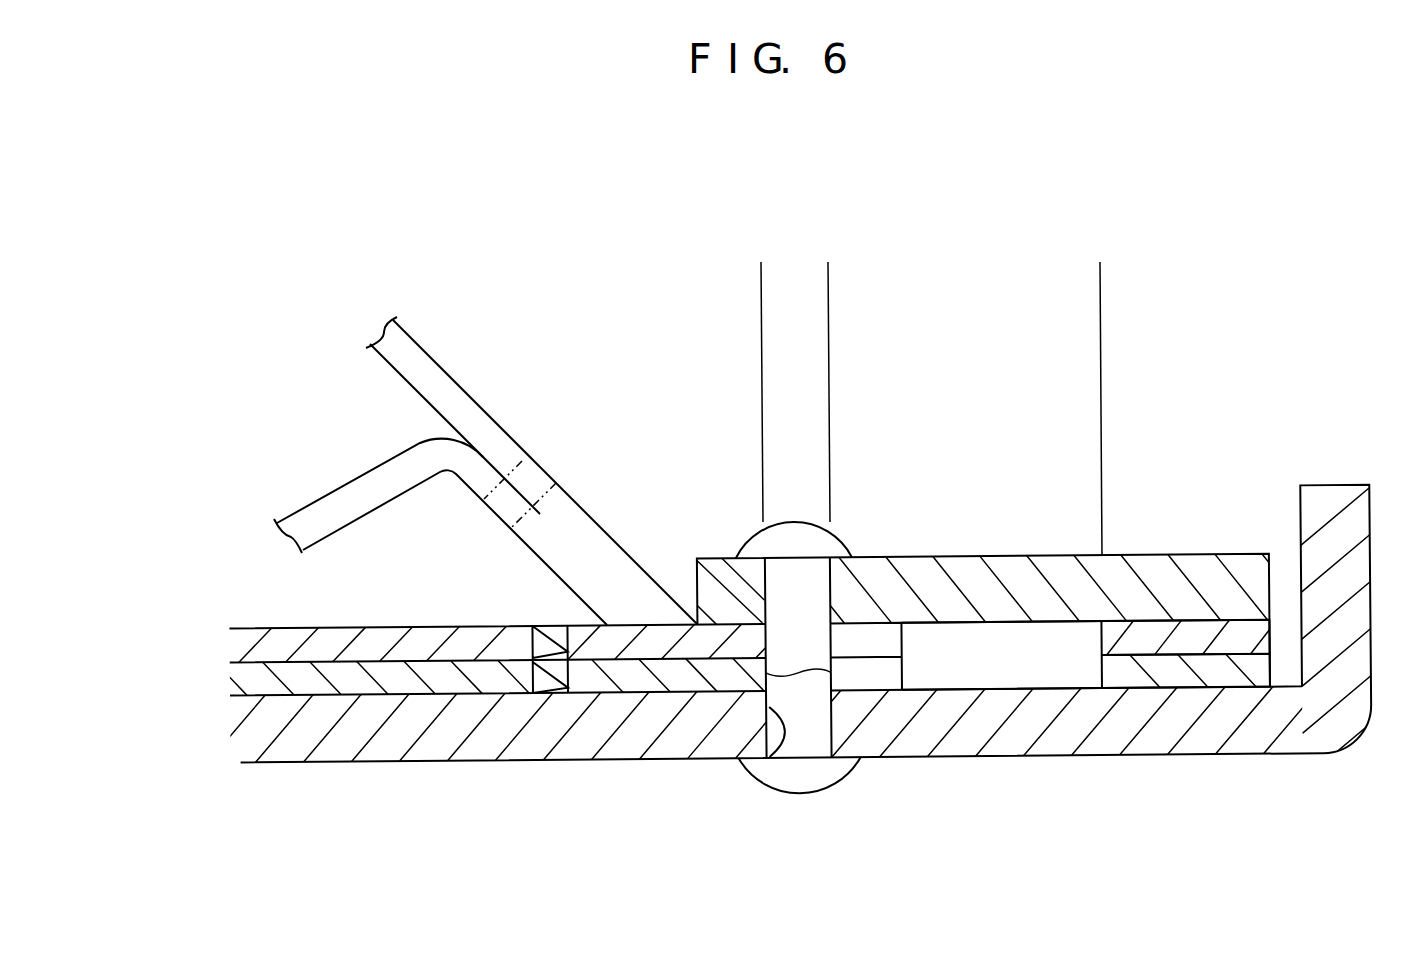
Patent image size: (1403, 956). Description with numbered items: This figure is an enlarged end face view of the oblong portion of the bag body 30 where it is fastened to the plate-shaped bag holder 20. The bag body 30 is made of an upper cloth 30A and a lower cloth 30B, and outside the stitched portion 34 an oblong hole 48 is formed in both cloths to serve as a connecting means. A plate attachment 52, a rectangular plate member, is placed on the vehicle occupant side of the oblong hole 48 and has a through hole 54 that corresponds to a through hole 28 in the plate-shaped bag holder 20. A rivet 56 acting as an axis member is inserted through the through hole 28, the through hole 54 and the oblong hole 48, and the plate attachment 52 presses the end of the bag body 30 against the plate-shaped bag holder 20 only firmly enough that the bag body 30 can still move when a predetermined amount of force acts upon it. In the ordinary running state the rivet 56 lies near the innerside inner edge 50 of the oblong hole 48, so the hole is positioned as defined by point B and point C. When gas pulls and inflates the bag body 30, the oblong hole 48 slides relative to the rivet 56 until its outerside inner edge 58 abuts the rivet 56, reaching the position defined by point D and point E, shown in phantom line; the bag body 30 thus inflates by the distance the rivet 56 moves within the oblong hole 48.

The plate-shaped bag holder 20 is at (550, 765).
The through hole 28 is at (763, 762).
The bag body 30 is at (436, 620).
The upper cloth 30A is at (1272, 635).
The lower cloth 30B is at (1272, 668).
The stitched portion 34 is at (549, 624).
The oblong hole 48 is at (1092, 643).
The innerside inner edge 50 is at (833, 674).
The plate attachment 52 is at (1157, 556).
The through hole 54 is at (769, 579).
The rivet 56 is at (792, 795).
The outerside inner edge 58 is at (1106, 666).
The point E is at (527, 447).
The point C is at (758, 370).
The point D is at (827, 370).
The point B is at (1098, 387).